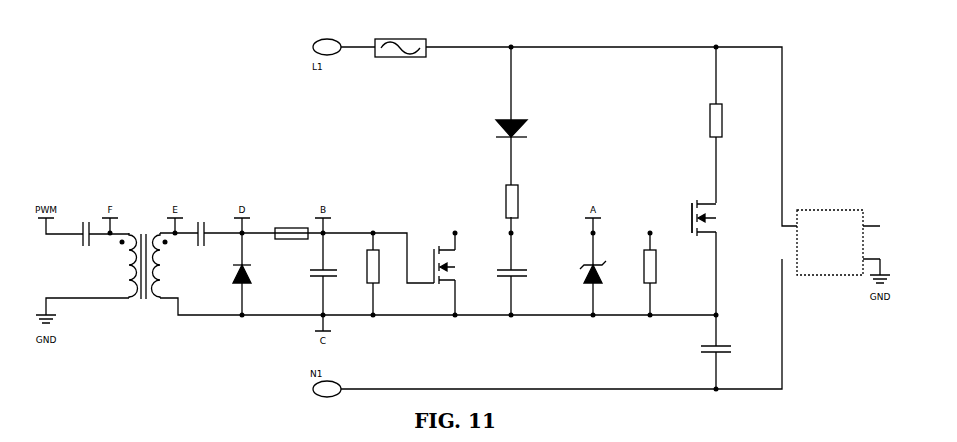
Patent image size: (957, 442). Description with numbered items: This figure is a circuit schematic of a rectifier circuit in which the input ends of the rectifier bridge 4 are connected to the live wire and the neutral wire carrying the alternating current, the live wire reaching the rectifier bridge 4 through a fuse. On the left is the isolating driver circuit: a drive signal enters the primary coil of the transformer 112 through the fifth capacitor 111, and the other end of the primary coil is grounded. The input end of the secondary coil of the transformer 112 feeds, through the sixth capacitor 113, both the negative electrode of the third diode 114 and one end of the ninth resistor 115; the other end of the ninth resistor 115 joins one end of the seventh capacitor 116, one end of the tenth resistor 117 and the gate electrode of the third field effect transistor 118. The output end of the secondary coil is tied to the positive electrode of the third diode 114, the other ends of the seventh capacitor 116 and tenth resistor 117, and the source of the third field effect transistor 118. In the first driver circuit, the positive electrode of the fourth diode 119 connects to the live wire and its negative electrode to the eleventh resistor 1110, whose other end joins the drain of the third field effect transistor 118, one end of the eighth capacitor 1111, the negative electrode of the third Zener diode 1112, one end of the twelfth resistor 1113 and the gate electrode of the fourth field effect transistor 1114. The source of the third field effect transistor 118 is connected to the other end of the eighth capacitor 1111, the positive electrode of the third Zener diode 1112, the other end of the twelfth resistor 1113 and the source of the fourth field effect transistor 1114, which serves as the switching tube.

The rectifier bridge 4 is at (834, 210).
The fifth capacitor 111 is at (86, 241).
The transformer 112 is at (156, 266).
The sixth capacitor 113 is at (202, 241).
The third diode 114 is at (253, 274).
The ninth resistor 115 is at (291, 241).
The seventh capacitor 116 is at (334, 275).
The tenth resistor 117 is at (384, 266).
The third field effect transistor 118 is at (456, 265).
The fourth diode 119 is at (523, 128).
The eleventh resistor 1110 is at (526, 201).
The eighth capacitor 1111 is at (526, 275).
The third Zener diode 1112 is at (605, 272).
The twelfth resistor 1113 is at (663, 266).
The fourth field effect transistor 1114 is at (719, 218).